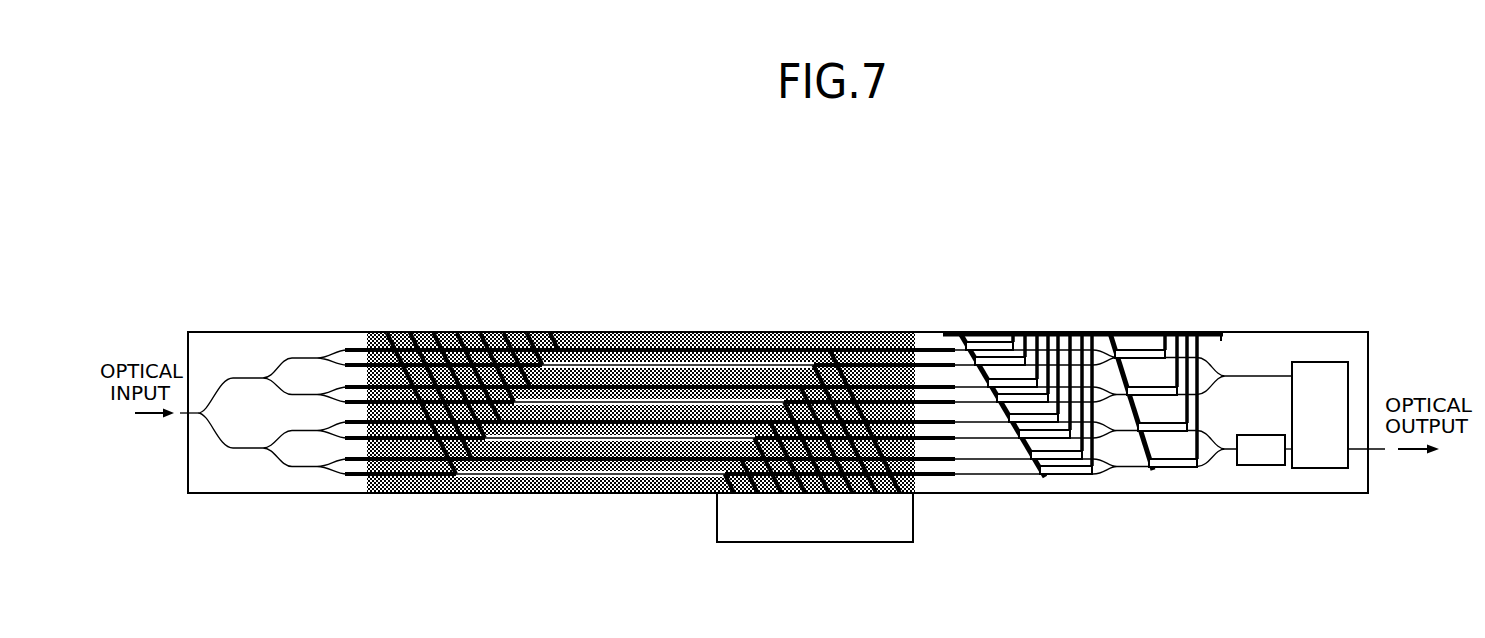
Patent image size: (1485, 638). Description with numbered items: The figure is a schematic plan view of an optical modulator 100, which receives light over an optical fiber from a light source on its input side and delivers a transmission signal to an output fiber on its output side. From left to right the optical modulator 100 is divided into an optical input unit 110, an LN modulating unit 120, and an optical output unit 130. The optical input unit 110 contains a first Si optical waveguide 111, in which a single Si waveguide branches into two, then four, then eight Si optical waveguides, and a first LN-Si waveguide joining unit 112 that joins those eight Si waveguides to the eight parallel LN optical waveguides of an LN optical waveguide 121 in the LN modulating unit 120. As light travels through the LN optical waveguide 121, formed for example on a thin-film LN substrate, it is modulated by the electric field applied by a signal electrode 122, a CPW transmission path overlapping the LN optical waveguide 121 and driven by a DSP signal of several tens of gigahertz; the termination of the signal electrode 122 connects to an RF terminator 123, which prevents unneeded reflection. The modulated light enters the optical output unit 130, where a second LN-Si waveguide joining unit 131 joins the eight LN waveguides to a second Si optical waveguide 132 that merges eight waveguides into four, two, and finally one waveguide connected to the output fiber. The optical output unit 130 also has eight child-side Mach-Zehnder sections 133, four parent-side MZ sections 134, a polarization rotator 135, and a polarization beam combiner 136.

The optical modulator 100 is at (1201, 216).
The optical input unit 110 is at (367, 322).
The first Si optical waveguide 111 is at (277, 455).
The first LN-Si waveguide joining unit 112 is at (348, 346).
The LN modulating unit 120 is at (913, 322).
The LN optical waveguide 121 is at (397, 475).
The signal electrode 122 is at (447, 475).
The RF terminator 123 is at (852, 542).
The optical output unit 130 is at (1368, 322).
The second LN-Si waveguide joining unit 131 is at (937, 336).
The second Si optical waveguide 132 is at (952, 336).
The child-side Mach-Zehnder (MZ) sections 133 is at (1060, 478).
The parent-side MZ sections 134 is at (1160, 472).
The polarization rotator 135 is at (1245, 435).
The polarization beam combiner 136 is at (1312, 362).